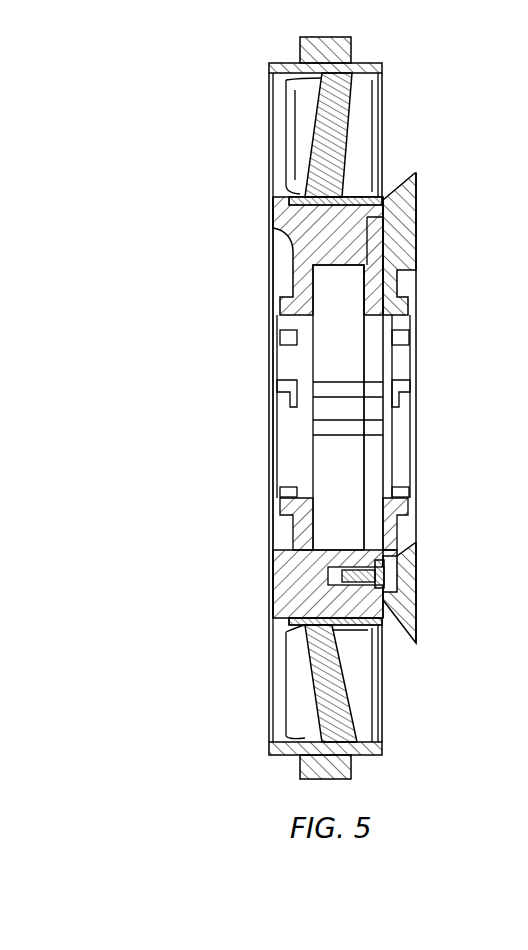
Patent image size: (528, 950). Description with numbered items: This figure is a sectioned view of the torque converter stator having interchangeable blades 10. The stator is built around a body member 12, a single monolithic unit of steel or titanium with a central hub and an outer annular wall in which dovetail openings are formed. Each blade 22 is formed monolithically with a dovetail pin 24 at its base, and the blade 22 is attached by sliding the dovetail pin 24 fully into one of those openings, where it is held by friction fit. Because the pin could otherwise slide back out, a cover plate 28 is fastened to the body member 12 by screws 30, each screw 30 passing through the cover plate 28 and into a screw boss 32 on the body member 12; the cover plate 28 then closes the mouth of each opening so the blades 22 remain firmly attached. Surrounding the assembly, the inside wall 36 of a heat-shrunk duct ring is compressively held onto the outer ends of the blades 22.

The torque converter stator having interchangeable blades 10 is at (150, 218).
The body member 12 is at (390, 47).
The blade 22 is at (328, 137).
The dovetail pin 24 is at (290, 230).
The cover plate 28 is at (410, 610).
The screw 30 is at (390, 572).
The screw boss 32 is at (275, 597).
The inside wall 36 is at (382, 88).